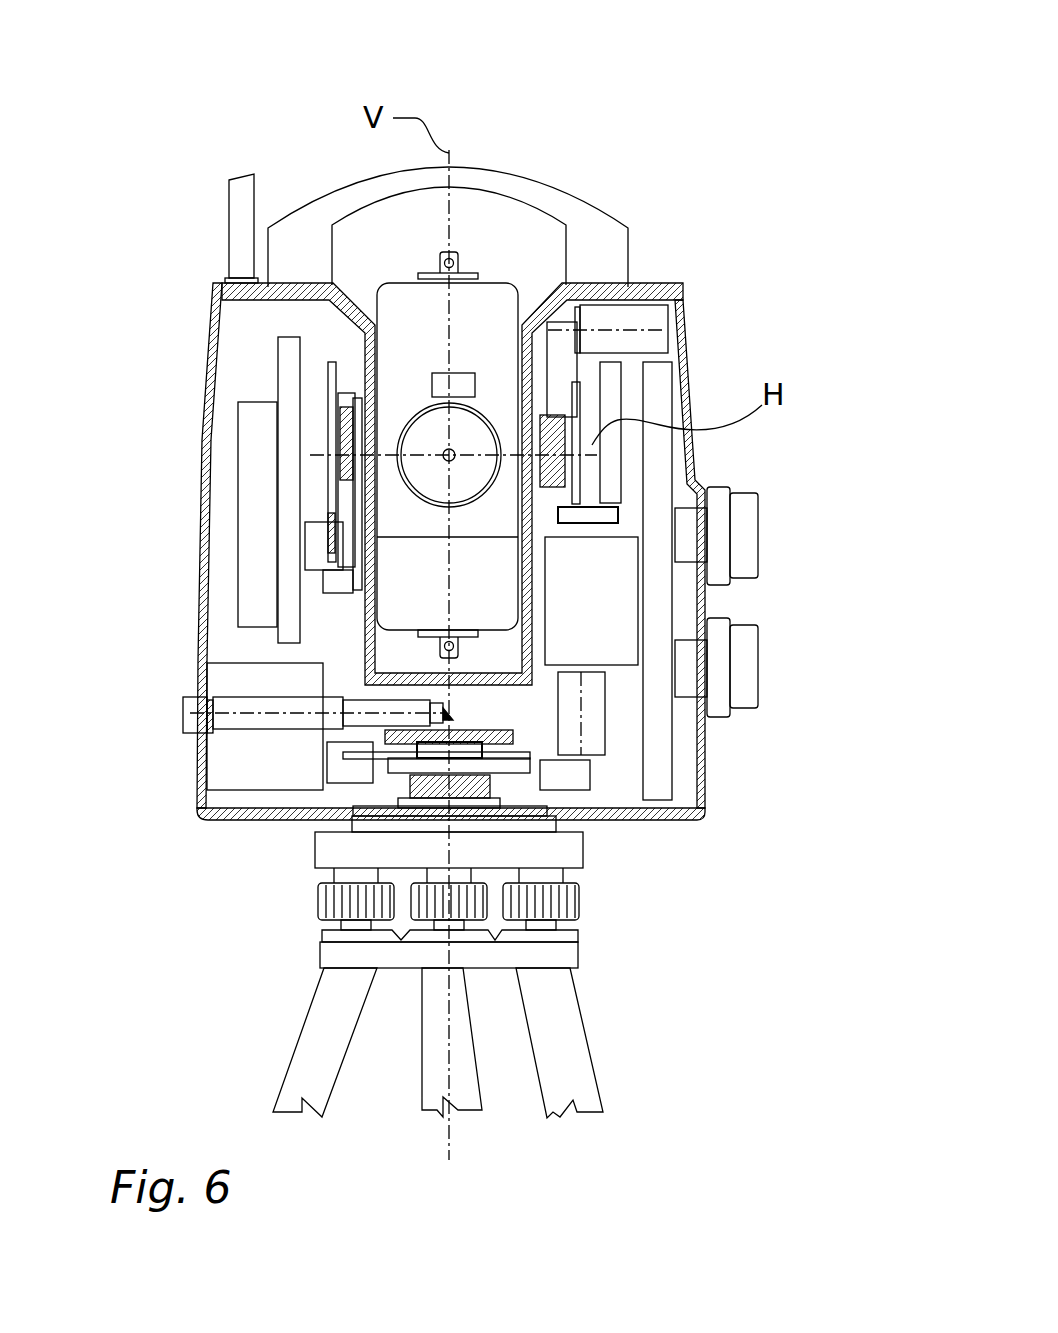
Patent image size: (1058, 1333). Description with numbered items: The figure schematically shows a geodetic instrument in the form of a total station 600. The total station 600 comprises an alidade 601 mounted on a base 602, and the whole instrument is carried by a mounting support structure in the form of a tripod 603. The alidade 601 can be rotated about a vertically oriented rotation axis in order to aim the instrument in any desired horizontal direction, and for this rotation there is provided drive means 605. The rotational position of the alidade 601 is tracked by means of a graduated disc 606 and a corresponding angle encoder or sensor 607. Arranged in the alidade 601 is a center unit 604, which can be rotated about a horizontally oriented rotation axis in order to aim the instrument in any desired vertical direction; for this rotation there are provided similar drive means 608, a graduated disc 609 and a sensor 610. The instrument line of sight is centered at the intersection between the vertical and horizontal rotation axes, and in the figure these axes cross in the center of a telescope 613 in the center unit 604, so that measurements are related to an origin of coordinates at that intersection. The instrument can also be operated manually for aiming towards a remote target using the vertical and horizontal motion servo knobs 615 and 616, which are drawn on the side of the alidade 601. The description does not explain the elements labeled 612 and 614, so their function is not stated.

The total station 600 is at (666, 172).
The alidade 601 is at (697, 829).
The base 602 is at (558, 850).
The tripod 603 is at (562, 1022).
The center unit 604 is at (491, 318).
The drive means 605 is at (598, 738).
The graduated disc 606 is at (383, 757).
The angle encoder or sensor 607 is at (340, 772).
The drive means 608 is at (653, 322).
The graduated disc 609 is at (330, 516).
The sensor 610 is at (313, 558).
The focusing knob 612 is at (197, 705).
The telescope 613 is at (422, 447).
The horizontal axis bearing 614 is at (432, 437).
The vertical motion servo knob 615 is at (745, 523).
The horizontal motion servo knob 616 is at (745, 658).